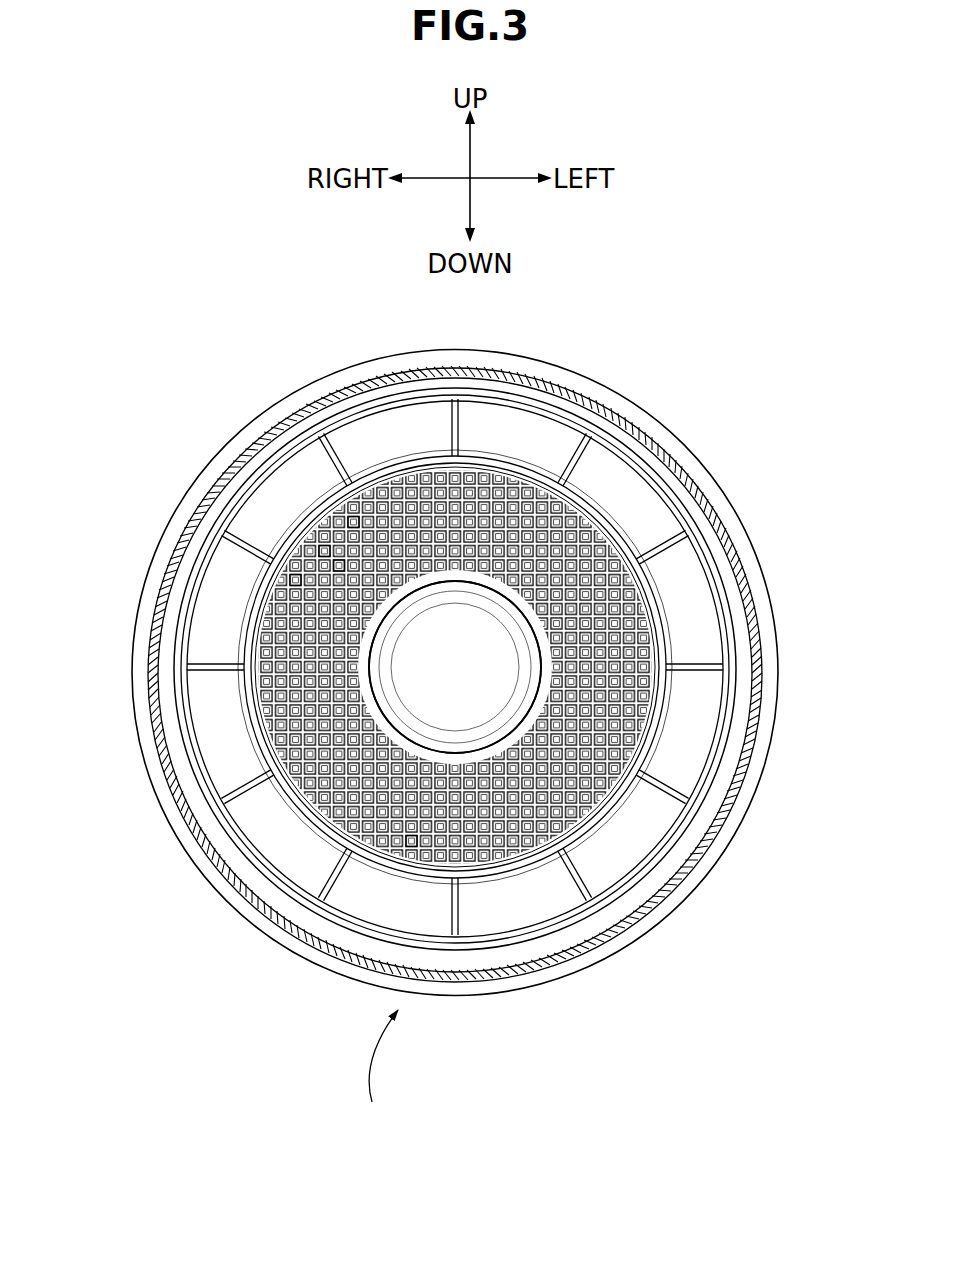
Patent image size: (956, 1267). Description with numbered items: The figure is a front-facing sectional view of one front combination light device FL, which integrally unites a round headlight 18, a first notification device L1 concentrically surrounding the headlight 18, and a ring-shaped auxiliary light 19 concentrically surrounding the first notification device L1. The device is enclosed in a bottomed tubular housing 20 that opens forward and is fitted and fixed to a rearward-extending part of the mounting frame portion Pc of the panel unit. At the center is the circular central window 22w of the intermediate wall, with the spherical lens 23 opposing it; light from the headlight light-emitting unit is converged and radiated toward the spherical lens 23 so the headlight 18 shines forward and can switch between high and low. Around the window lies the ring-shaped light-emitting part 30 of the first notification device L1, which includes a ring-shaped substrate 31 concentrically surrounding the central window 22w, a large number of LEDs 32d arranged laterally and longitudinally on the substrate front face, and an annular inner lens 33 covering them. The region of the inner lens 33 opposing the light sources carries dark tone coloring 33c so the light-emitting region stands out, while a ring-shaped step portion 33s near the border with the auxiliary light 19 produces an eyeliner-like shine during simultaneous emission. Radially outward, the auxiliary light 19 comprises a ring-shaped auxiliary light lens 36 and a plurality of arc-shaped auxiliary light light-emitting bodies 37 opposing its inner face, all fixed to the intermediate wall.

The headlight 18 is at (392, 661).
The auxiliary light 19 is at (382, 669).
The housing 20 is at (694, 446).
The central window 22w is at (402, 598).
The spherical lens 23 is at (437, 682).
The ring-shaped light-emitting part 30 is at (515, 494).
The ring-shaped substrate 31 is at (412, 850).
The LED 32d is at (323, 546).
The inner lens 33 is at (680, 862).
The dark tone coloring 33c is at (646, 582).
The step portion 33s is at (665, 722).
The auxiliary light lens 36 is at (169, 699).
The auxiliary light light-emitting body 37 is at (252, 913).
The front combination light device FL is at (374, 1071).
The first notification device L1 is at (529, 853).
The mounting frame portion Pc is at (161, 586).